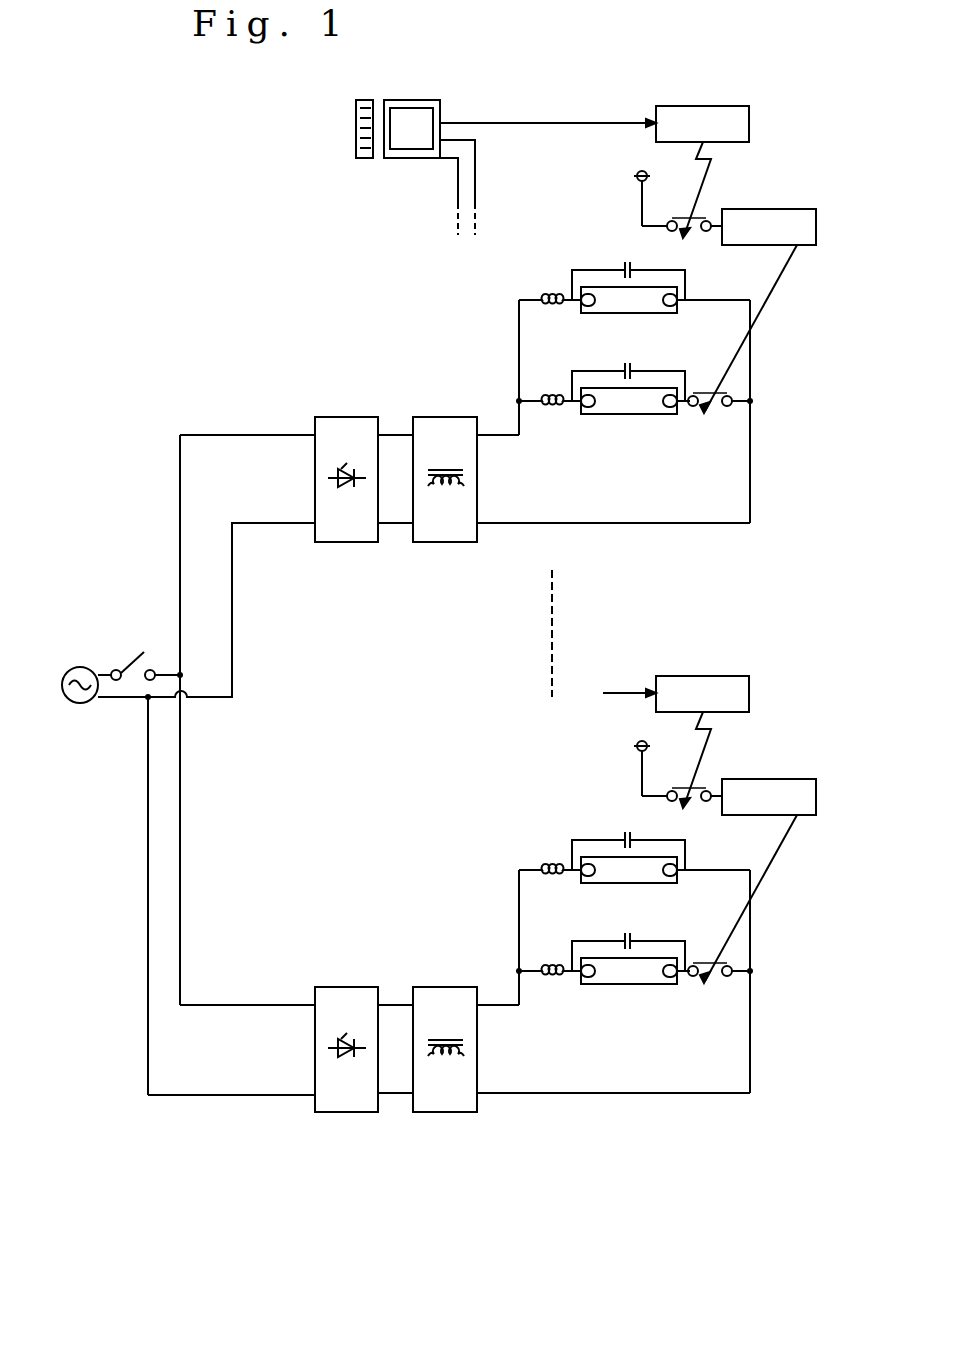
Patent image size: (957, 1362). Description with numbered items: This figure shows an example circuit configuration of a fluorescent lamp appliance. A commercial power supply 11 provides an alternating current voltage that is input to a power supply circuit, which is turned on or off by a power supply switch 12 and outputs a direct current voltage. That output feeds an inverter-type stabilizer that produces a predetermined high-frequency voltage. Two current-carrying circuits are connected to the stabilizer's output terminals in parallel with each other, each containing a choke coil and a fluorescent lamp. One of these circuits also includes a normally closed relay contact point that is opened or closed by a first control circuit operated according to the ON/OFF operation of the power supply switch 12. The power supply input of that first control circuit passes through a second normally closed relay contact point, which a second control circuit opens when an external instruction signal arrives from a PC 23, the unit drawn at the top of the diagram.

The commercial power supply 11 is at (78, 641).
The power supply switch 12 is at (139, 629).
The PC 23 is at (506, 136).